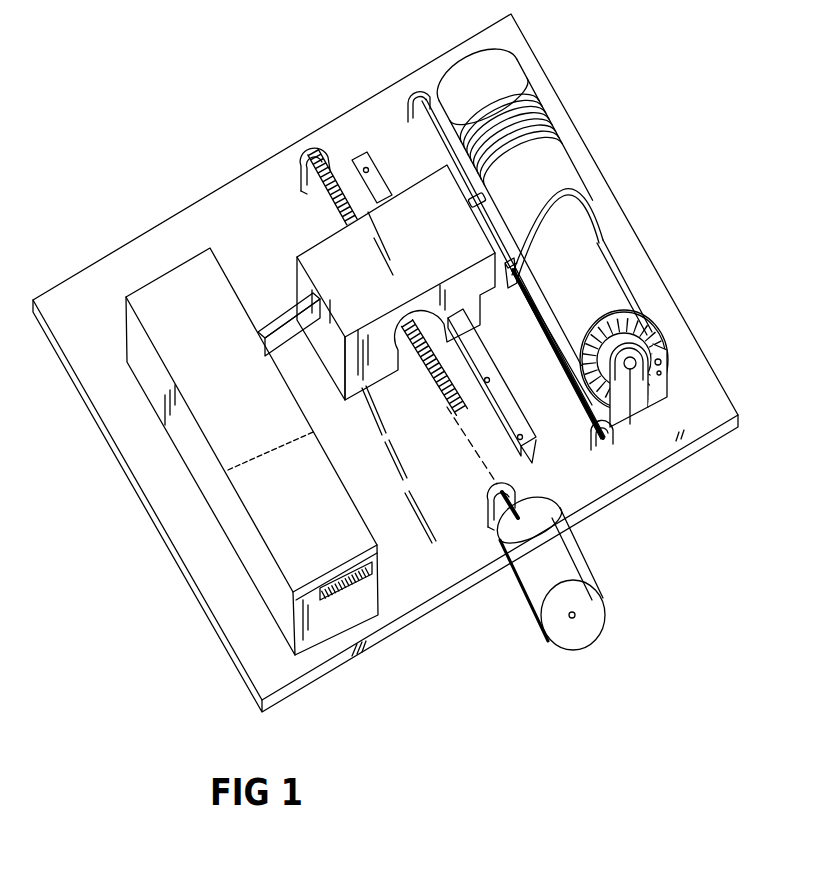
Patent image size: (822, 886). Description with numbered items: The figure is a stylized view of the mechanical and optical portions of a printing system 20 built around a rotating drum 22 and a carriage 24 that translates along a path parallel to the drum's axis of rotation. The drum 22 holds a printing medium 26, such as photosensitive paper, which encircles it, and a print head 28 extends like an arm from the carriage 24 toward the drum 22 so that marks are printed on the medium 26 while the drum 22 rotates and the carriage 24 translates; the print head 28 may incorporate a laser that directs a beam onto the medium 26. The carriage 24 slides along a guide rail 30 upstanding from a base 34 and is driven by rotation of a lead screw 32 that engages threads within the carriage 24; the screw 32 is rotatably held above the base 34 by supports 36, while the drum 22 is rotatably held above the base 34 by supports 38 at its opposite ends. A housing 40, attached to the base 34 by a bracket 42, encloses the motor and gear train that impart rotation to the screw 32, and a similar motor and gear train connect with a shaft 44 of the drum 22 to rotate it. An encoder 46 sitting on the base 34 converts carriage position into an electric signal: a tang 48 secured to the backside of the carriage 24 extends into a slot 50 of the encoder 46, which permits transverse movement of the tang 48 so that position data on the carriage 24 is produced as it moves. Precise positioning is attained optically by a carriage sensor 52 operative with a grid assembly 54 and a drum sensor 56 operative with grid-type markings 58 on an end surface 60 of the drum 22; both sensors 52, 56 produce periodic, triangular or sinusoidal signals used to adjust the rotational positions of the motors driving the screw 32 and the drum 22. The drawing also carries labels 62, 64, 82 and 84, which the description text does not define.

The system 20 is at (276, 118).
The rotating drum 22 is at (611, 247).
The carriage 24 is at (304, 238).
The printing medium 26 is at (566, 174).
The print head 28 is at (492, 192).
The guide rail 30 is at (475, 343).
The lead screw 32 is at (438, 399).
The base 34 is at (385, 645).
The supports 36 is at (326, 142).
The supports 38 is at (473, 54).
The housing 40 is at (575, 562).
The bracket 42 is at (527, 503).
The shaft 44 is at (611, 428).
The encoder 46 is at (338, 485).
The tang 48 is at (290, 310).
The slot 50 is at (374, 559).
The carriage sensor 52 is at (517, 274).
The grid assembly 54 is at (527, 307).
The drum sensor 56 is at (671, 345).
The grid-type markings 58 is at (626, 308).
The end surface 60 is at (640, 320).
The guide rod 62 is at (558, 357).
The rod clip 64 is at (410, 91).
The pawl 82 is at (672, 334).
The pawl pin 84 is at (668, 360).